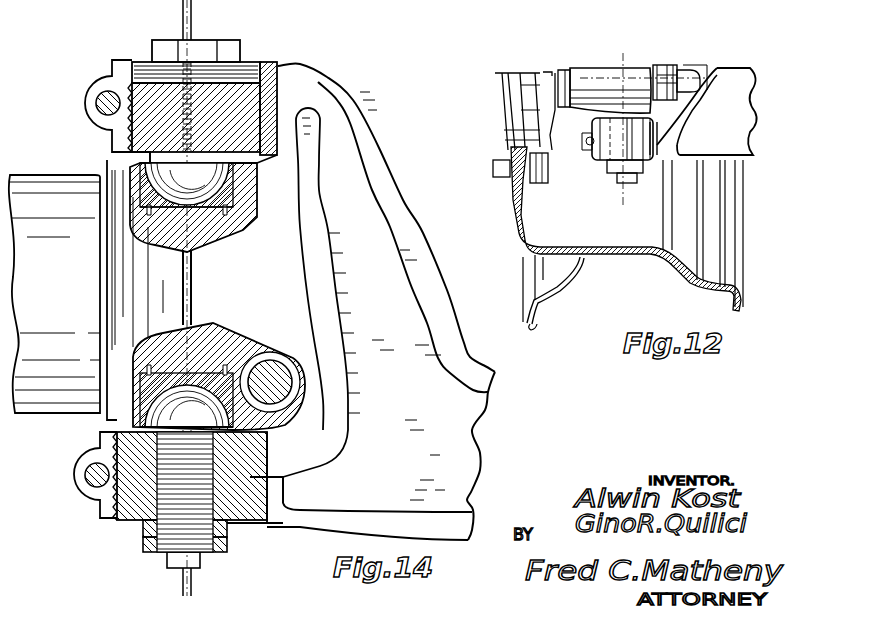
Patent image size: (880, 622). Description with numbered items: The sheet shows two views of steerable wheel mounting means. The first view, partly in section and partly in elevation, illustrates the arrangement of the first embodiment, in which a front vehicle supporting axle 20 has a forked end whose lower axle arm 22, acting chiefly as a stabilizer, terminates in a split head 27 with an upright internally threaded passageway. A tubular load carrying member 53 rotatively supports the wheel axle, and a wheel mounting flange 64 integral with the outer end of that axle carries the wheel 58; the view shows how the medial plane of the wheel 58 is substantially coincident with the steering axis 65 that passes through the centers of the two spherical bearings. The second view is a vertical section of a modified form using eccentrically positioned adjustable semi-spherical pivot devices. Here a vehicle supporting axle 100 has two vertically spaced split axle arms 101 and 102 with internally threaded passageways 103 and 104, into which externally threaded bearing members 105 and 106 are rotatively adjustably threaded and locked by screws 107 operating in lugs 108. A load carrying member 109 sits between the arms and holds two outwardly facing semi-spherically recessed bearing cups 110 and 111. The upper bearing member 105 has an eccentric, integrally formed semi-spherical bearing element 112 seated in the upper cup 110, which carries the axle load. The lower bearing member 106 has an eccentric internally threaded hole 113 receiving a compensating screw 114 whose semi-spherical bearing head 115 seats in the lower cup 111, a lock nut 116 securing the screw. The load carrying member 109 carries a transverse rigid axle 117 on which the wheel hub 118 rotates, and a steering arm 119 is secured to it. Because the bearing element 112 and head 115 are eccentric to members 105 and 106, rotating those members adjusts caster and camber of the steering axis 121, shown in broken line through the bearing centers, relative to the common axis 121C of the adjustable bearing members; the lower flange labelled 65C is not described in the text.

In FIG. 14, the vehicle supporting axle 100 is at (467, 500).
In FIG. 14, the split axle arm 101 is at (338, 94).
In FIG. 14, the split axle arm 102 is at (281, 521).
In FIG. 14, the internally threaded passageway 103 is at (297, 68).
In FIG. 14, the internally threaded passageway 104 is at (280, 478).
In FIG. 14, the externally threaded bearing member 105 is at (268, 110).
In FIG. 14, the externally threaded bearing member 106 is at (250, 460).
In FIG. 14, the screw 107 is at (98, 103).
In FIG. 14, the lug 108 is at (88, 118).
In FIG. 14, the load carrying member 109 is at (185, 286).
In FIG. 14, the bearing cup 110 is at (230, 195).
In FIG. 14, the bearing cup 111 is at (258, 353).
In FIG. 14, the semi-spherical bearing element 112 is at (118, 168).
In FIG. 14, the internally threaded hole 113 is at (155, 503).
In FIG. 14, the compensating screw 114 is at (158, 527).
In FIG. 14, the semi-spherical bearing head 115 is at (165, 410).
In FIG. 14, the lock nut 116 is at (147, 540).
In FIG. 14, the rigid axle 117 is at (107, 283).
In FIG. 14, the wheel hub 118 is at (38, 186).
In FIG. 14, the steering arm 119 is at (290, 377).
In FIG. 14, the steering axis 121 is at (183, 17).
In FIG. 14, the common axis 121C is at (191, 12).
In FIG. 12, the tubular load carrying member 53 is at (580, 80).
In FIG. 12, the split head 27 is at (610, 155).
In FIG. 12, the lower axle arm 22 is at (668, 150).
In FIG. 12, the front vehicle supporting axle 20 is at (748, 158).
In FIG. 12, the wheel mounting flange 64 is at (534, 208).
In FIG. 12, the wheel 58 is at (530, 232).
In FIG. 12, the steering axis 65 is at (638, 266).
In FIG. 12, the flange 65C is at (623, 273).